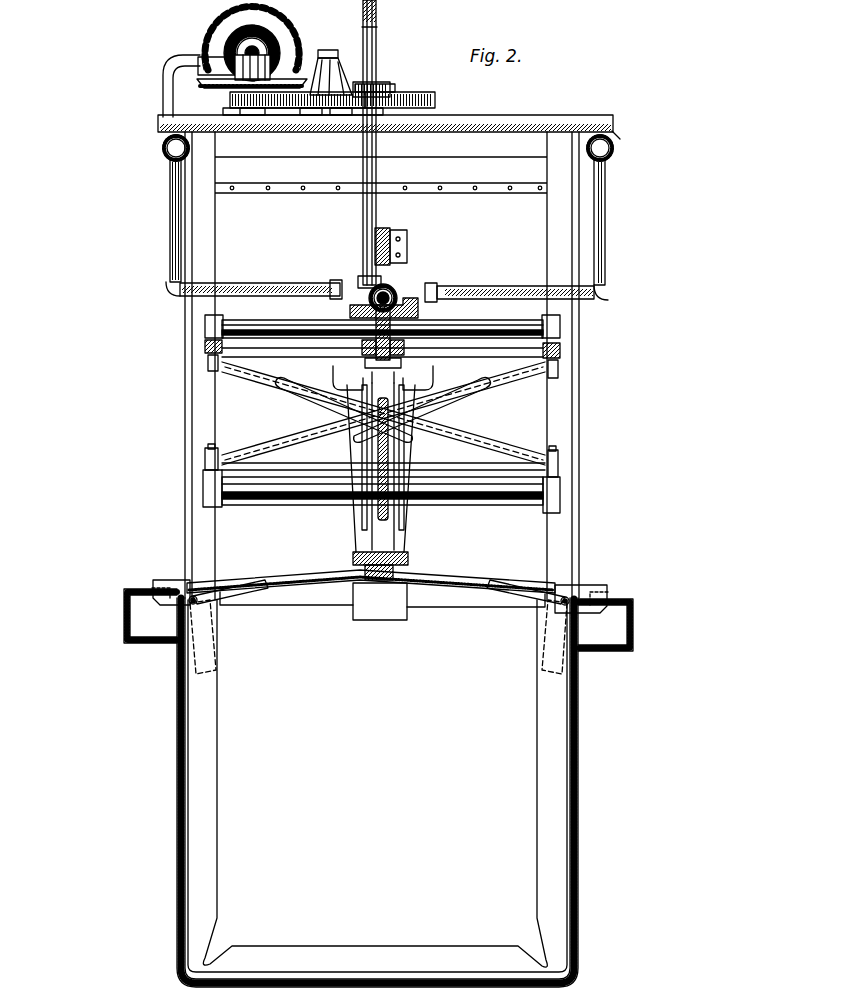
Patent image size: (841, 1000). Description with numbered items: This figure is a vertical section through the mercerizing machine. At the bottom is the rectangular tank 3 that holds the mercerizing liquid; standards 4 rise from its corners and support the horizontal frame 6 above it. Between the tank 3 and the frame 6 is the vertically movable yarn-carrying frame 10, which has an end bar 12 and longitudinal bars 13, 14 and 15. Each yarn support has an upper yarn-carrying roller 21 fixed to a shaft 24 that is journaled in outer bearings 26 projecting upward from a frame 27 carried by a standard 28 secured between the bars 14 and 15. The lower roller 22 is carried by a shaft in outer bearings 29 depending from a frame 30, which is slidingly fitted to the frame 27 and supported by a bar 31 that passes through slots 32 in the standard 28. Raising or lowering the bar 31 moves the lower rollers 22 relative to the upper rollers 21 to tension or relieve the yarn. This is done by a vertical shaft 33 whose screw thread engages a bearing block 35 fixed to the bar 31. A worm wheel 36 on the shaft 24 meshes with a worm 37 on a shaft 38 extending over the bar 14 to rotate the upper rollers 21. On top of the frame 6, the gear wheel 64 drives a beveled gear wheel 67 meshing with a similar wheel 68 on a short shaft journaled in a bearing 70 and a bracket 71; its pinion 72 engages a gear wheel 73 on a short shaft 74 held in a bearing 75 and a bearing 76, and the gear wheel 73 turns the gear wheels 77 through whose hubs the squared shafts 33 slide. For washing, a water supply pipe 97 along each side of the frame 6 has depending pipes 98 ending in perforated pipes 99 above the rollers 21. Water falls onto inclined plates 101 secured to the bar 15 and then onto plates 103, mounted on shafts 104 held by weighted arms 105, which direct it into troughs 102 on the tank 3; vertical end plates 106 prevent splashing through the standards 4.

The tank 3 is at (580, 808).
The standards 4 is at (184, 384).
The horizontal frame 6 is at (616, 139).
The yarn-carrying frame 10 is at (368, 285).
The end bar 12 is at (400, 620).
The upper longitudinal bar 13 is at (395, 228).
The longitudinal bar 14 is at (420, 312).
The longitudinal bar 15 is at (395, 555).
The upper yarn-carrying roller 21 is at (278, 322).
The lower yarn-carrying roller 22 is at (272, 506).
The shaft 24 is at (352, 330).
The outer bearings 26 is at (205, 322).
The frame 27 is at (255, 362).
The standard 28 is at (372, 537).
The outer bearings 29 is at (205, 496).
The frame 30 is at (212, 452).
The bar 31 is at (378, 420).
The slots 32 is at (390, 512).
The vertical shaft 33 is at (377, 14).
The bearing block 35 is at (410, 368).
The worm wheel 36 is at (360, 368).
The worm 37 is at (395, 293).
The shaft 38 is at (392, 290).
The gear wheel 64 is at (268, 26).
The beveled gear wheel 67 is at (292, 48).
The beveled gear wheel 68 is at (240, 80).
The bearing 70 is at (252, 115).
The bracket 71 is at (168, 62).
The pinion 72 is at (240, 99).
The gear wheel 73 is at (305, 115).
The short shaft 74 is at (330, 50).
The bearing 75 is at (340, 115).
The bearing 76 is at (352, 70).
The gear wheel 77 is at (436, 98).
The water supply pipe 97 is at (162, 150).
The depending pipe 98 is at (182, 236).
The pipe 99 is at (284, 286).
The inclined plate 101 is at (318, 598).
The trough 102 is at (122, 628).
The plate 103 is at (240, 593).
The shaft 104 is at (198, 604).
The weighted arm 105 is at (150, 582).
The vertical end plate 106 is at (540, 223).